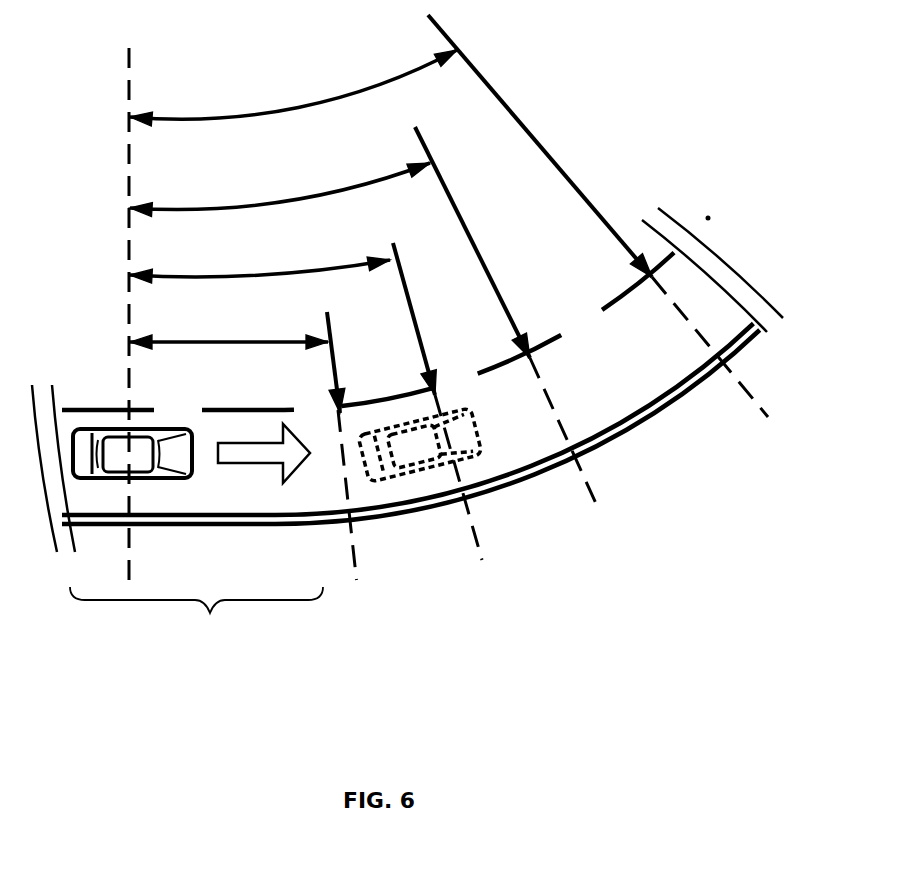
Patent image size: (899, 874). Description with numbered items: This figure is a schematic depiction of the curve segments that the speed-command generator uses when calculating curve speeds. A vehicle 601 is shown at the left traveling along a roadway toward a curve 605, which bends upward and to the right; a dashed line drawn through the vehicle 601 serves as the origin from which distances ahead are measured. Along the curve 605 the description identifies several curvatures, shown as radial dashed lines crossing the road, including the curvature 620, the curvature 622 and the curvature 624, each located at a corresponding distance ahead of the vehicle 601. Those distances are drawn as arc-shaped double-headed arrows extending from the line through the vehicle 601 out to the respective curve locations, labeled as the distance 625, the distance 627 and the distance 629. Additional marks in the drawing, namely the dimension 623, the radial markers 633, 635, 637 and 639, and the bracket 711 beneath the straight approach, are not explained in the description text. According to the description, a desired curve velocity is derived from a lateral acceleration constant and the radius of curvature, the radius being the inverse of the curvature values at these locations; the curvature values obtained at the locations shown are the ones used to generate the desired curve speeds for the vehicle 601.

The vehicle 601 is at (182, 478).
The curve 605 is at (173, 517).
The curvature 620 is at (355, 577).
The curvature 622 is at (482, 560).
The first distance 623 is at (192, 345).
The curvature 624 is at (598, 508).
The distance 625 is at (180, 281).
The distance 627 is at (197, 215).
The distance 629 is at (207, 122).
The first location marker 633 is at (333, 362).
The second location marker 635 is at (428, 328).
The third location marker 637 is at (495, 283).
The fourth location marker 639 is at (577, 172).
The vehicle region 711 is at (196, 618).